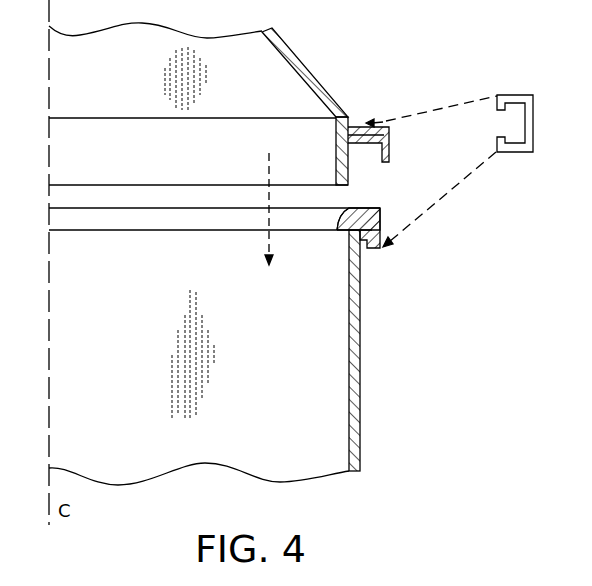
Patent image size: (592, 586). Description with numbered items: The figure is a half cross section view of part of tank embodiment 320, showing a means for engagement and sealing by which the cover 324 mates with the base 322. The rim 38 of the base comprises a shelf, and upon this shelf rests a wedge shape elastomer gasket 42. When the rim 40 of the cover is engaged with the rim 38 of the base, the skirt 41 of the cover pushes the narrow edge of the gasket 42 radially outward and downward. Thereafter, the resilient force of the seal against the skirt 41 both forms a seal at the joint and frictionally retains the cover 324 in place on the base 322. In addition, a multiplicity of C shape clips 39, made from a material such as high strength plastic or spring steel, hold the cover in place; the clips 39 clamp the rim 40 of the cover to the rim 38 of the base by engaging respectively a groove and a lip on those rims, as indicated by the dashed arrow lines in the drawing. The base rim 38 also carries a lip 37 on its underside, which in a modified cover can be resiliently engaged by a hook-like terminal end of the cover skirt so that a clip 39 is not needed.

The tank embodiment 320 is at (419, 270).
The base 322 is at (361, 400).
The cover 324 is at (304, 64).
The lip 37 is at (375, 250).
The rim of the base 38 is at (382, 218).
The C shape clips 39 is at (536, 113).
The rim of the cover 40 is at (391, 153).
The skirt 41 is at (335, 156).
The wedge shape elastomer gasket 42 is at (338, 217).